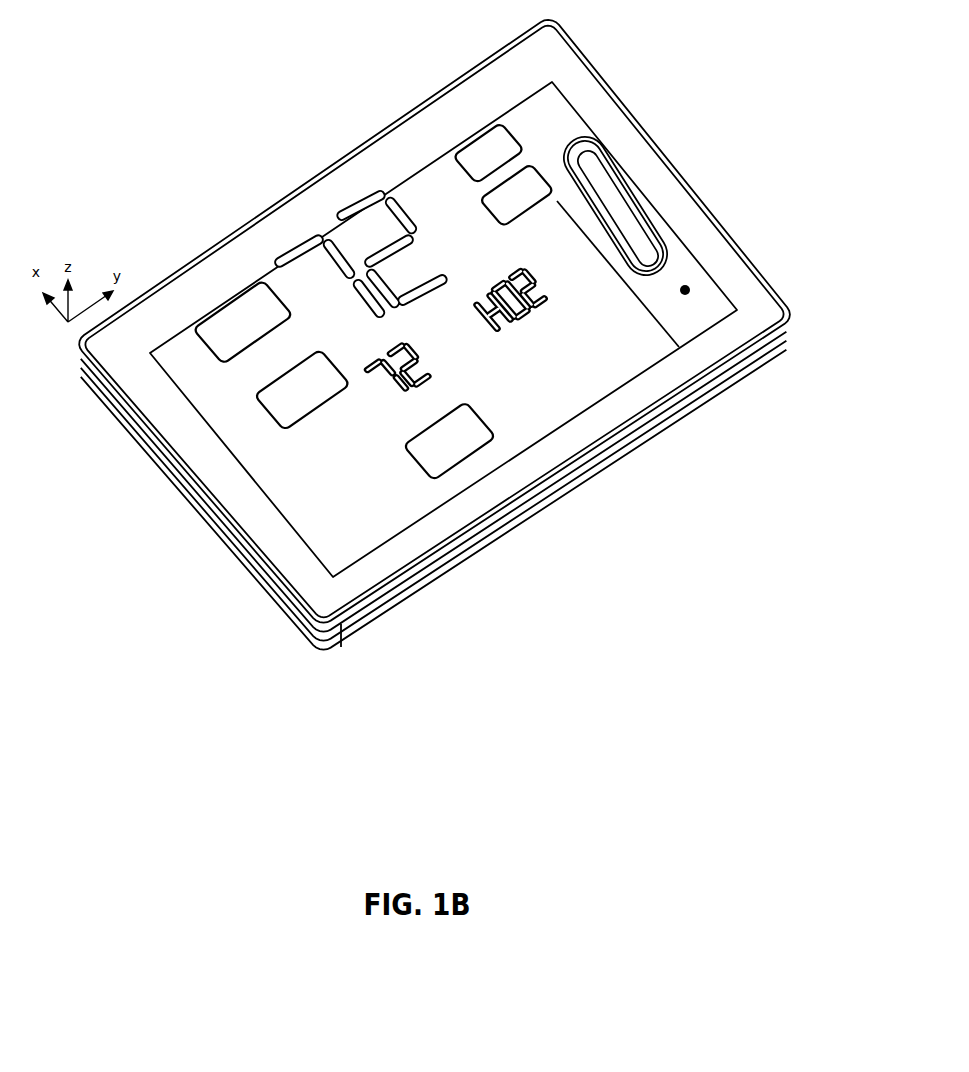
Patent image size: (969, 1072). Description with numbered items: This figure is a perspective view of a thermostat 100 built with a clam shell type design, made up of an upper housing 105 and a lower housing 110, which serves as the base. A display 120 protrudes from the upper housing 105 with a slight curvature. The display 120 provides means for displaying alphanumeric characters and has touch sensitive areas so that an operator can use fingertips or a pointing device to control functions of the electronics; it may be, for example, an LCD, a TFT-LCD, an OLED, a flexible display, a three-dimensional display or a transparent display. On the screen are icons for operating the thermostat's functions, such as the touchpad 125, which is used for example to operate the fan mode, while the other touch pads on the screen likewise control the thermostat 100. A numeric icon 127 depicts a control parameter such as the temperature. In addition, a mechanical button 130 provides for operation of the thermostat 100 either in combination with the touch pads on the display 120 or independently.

The thermostat 100 is at (325, 673).
The upper housing 105 is at (297, 572).
The lower housing 110 is at (207, 527).
The display 120 is at (400, 497).
The touchpad 125 is at (272, 403).
The numeric icon 127 is at (328, 222).
The mechanical button 130 is at (593, 177).